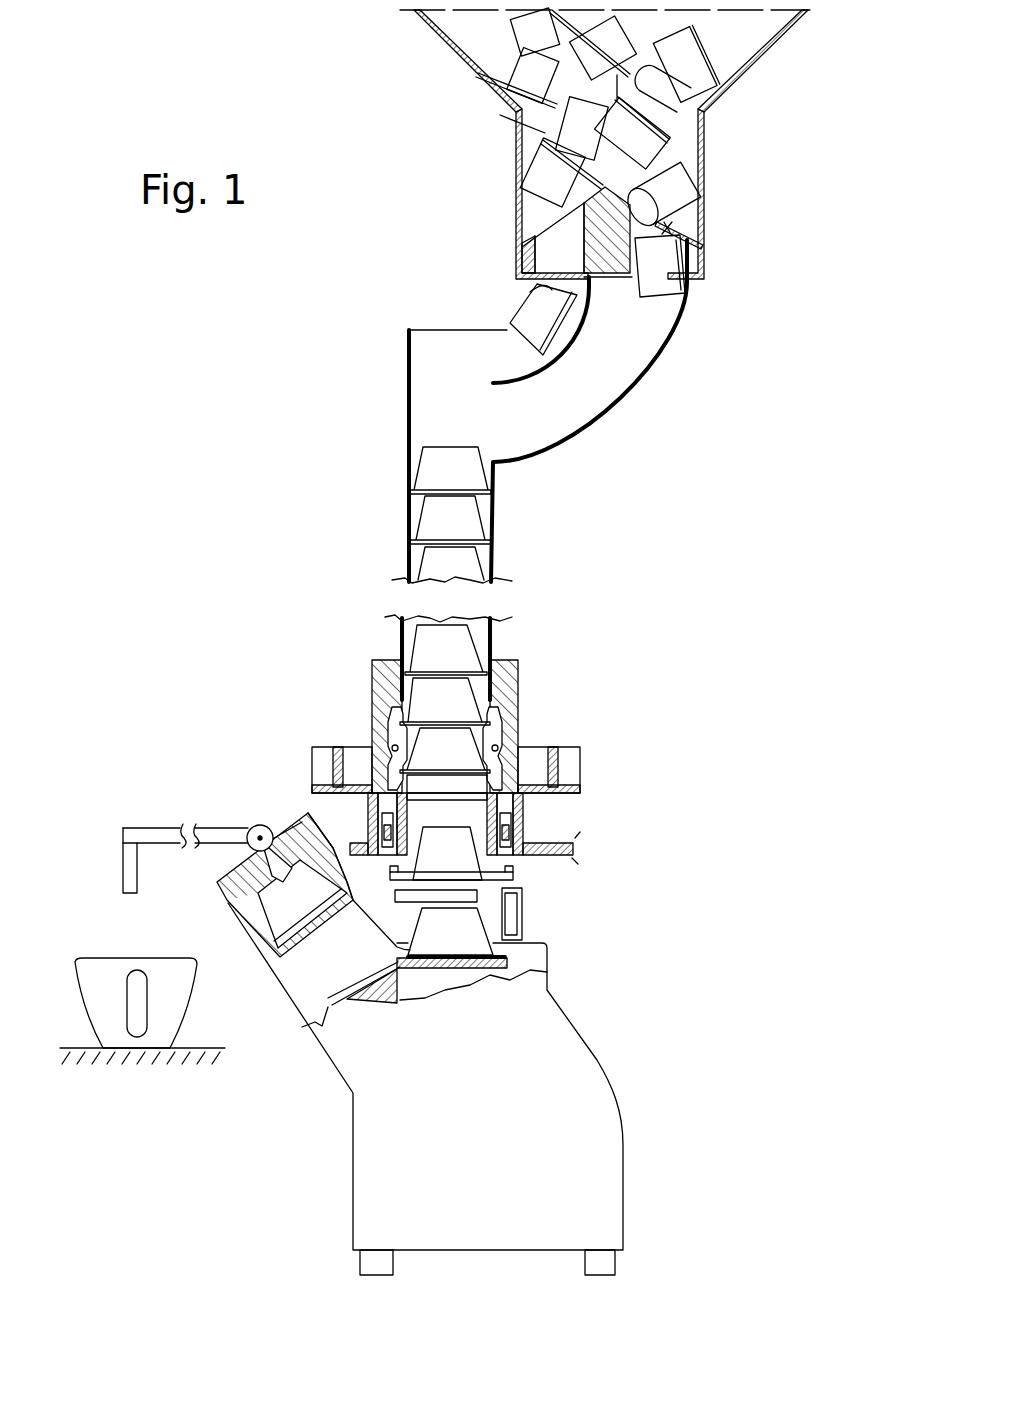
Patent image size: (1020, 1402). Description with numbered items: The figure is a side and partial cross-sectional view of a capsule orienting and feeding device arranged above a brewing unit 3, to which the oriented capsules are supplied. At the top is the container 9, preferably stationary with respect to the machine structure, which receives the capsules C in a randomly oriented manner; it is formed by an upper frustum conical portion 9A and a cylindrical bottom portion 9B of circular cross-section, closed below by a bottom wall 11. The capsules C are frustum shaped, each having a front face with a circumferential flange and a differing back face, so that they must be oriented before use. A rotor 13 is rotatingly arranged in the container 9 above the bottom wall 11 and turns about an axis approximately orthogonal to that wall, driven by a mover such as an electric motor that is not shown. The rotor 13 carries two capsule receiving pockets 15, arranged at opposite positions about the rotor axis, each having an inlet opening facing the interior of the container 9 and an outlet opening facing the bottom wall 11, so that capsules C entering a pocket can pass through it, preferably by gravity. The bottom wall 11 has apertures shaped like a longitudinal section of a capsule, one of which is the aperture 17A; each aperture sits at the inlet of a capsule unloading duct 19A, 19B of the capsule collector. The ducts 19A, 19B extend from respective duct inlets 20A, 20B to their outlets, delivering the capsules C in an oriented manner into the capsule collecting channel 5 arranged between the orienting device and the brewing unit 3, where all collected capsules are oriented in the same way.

The brewing unit 3 is at (594, 1034).
The capsule collecting channel 5 is at (412, 418).
The container 9 is at (605, 144).
The frustum conical portion 9A is at (755, 73).
The cylindrical bottom portion 9B is at (704, 172).
The bottom wall 11 is at (600, 290).
The rotor 13 is at (582, 196).
The capsule receiving pocket 15 is at (542, 238).
The aperture 17A is at (530, 292).
The capsule unloading duct 19A is at (497, 352).
The capsule unloading duct 19B is at (565, 400).
The duct inlet 20A is at (566, 272).
The duct inlet 20B is at (672, 297).
The capsule C is at (522, 73).